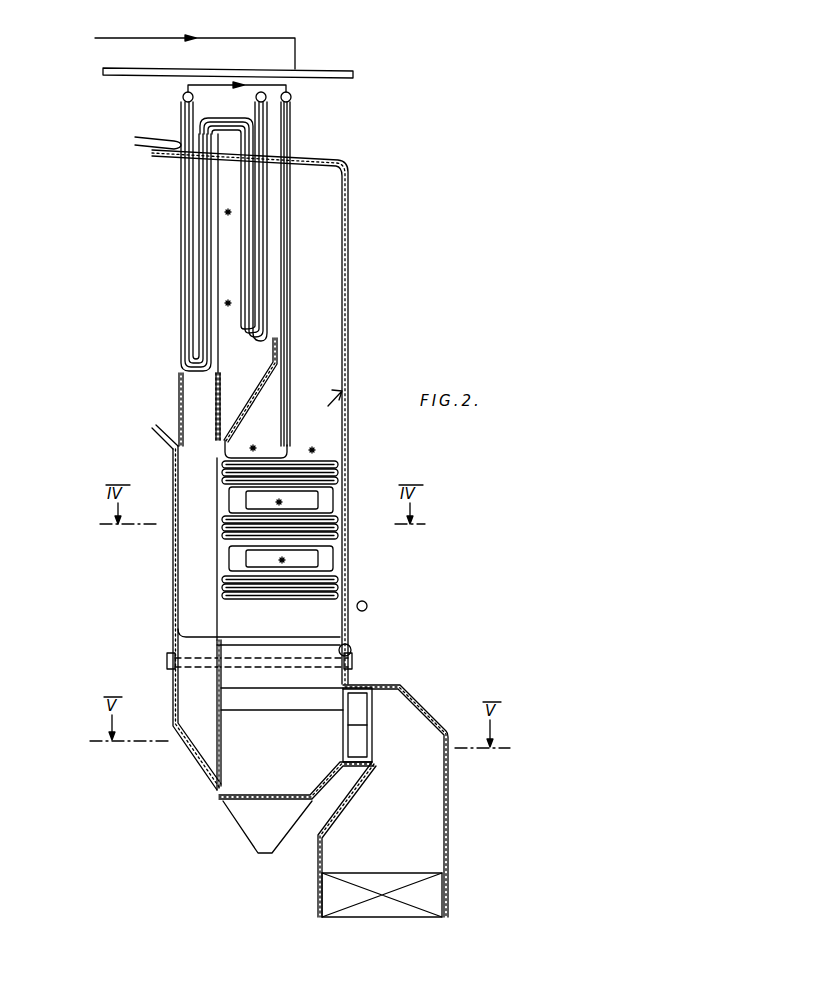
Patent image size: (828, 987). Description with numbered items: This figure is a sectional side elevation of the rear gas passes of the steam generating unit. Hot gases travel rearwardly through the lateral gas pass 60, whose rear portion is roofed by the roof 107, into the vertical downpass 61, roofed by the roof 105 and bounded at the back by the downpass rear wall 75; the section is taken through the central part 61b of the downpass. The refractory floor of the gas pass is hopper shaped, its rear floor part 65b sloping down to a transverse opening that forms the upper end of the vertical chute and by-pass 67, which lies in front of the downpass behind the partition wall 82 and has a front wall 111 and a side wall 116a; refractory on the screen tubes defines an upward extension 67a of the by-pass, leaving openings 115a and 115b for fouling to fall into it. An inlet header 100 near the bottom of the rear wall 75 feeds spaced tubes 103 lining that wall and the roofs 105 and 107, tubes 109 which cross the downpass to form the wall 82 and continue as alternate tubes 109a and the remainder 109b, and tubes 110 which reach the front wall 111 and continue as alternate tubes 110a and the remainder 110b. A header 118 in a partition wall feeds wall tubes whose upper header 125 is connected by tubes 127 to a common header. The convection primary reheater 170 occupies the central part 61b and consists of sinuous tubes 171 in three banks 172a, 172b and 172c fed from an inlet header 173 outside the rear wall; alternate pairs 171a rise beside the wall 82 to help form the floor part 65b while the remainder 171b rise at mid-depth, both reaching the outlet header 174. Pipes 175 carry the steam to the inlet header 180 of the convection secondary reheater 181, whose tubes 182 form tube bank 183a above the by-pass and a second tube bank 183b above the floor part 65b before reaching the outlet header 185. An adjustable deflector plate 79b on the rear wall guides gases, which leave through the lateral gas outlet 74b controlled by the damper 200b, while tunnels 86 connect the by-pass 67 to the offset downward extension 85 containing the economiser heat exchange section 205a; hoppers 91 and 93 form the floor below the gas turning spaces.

The tubes 127 is at (249, 37).
The upper header 125 is at (346, 79).
The pipes 175 is at (197, 85).
The inlet header 180 is at (183, 97).
The tubes 182 is at (170, 236).
The outlet header 185 is at (257, 101).
The outlet header 174 is at (291, 100).
The spaced tubes 103 is at (152, 155).
The roof 107 is at (162, 154).
The roof 105 is at (304, 162).
The lateral gas pass 60 is at (127, 223).
The convection secondary reheater 181 is at (190, 250).
The tube bank 183a is at (164, 236).
The second tube bank 183b is at (260, 250).
The vertical downpass 61 is at (333, 313).
The central part of downpass 61b is at (327, 357).
The adjustable deflector plate 79b is at (346, 391).
The downpass rear wall 75 is at (349, 429).
The alternate tubes 109a is at (218, 335).
The remainder of tubes 109 109b is at (275, 363).
The upward extension of by-pass 67a is at (201, 406).
The floor part 65b is at (241, 420).
The remainder of tubes 110 110b is at (155, 427).
The alternate tubes 110a is at (183, 432).
The opening 115a is at (176, 441).
The opening 115b is at (176, 453).
The alternate pairs of tubes 171a is at (229, 448).
The remainder of tubes 171 171b is at (288, 402).
The tube bank 172c is at (312, 478).
The side wall of by-pass 116a is at (198, 513).
The vertical chute and by-pass 67 is at (196, 526).
The partition wall 82 is at (220, 560).
The tube bank 172b is at (314, 518).
The convection primary reheater 170 is at (309, 530).
The sinuous tubes 171 is at (318, 563).
The tube bank 172a is at (322, 588).
The inlet header 173 is at (343, 606).
The front wall of by-pass 111 is at (172, 586).
The tubes 110 is at (196, 637).
The tubes 109 is at (283, 656).
The inlet header 100 is at (352, 648).
The header 118 is at (353, 664).
The lateral gas outlet 74b is at (371, 723).
The damper 200b is at (357, 750).
The hopper 93 is at (202, 738).
The tunnels 86 is at (250, 773).
The hopper 91 is at (262, 828).
The offset downward extension 85 is at (432, 829).
The economiser heat exchange section 205a is at (435, 897).